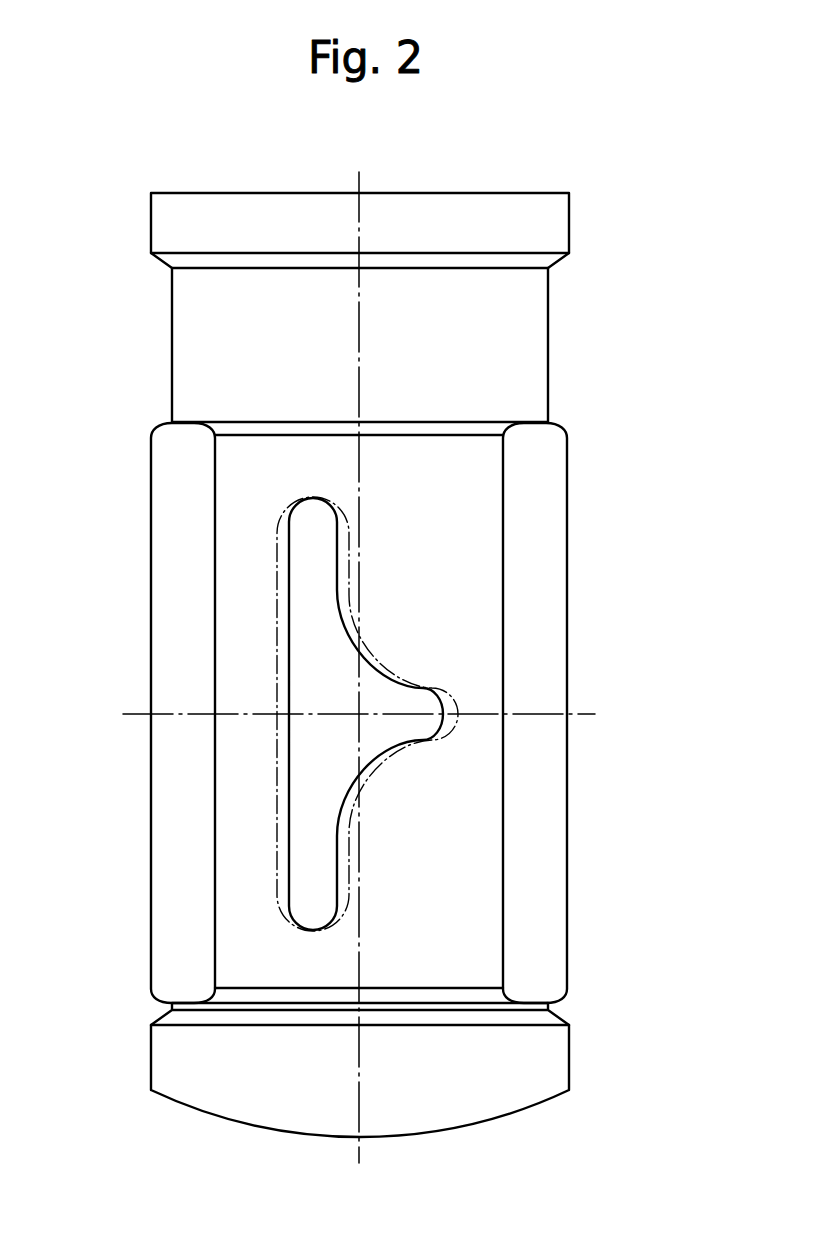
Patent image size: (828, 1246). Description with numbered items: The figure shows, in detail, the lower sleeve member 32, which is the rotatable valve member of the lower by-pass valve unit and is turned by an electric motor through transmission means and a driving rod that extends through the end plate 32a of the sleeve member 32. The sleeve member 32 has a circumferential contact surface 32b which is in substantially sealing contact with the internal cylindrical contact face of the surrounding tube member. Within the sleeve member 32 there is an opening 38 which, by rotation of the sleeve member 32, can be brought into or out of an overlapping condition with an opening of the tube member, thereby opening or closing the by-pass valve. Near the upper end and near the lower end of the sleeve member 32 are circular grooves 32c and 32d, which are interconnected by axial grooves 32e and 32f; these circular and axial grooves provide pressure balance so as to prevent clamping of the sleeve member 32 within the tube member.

The sleeve member 32 is at (360, 682).
The end plate 32a is at (263, 1107).
The circumferential contact surface 32b is at (460, 771).
The circular groove 32c is at (163, 1009).
The circular groove 32d is at (160, 334).
The axial groove 32e is at (525, 855).
The axial groove 32f is at (190, 885).
The opening 38 is at (315, 748).